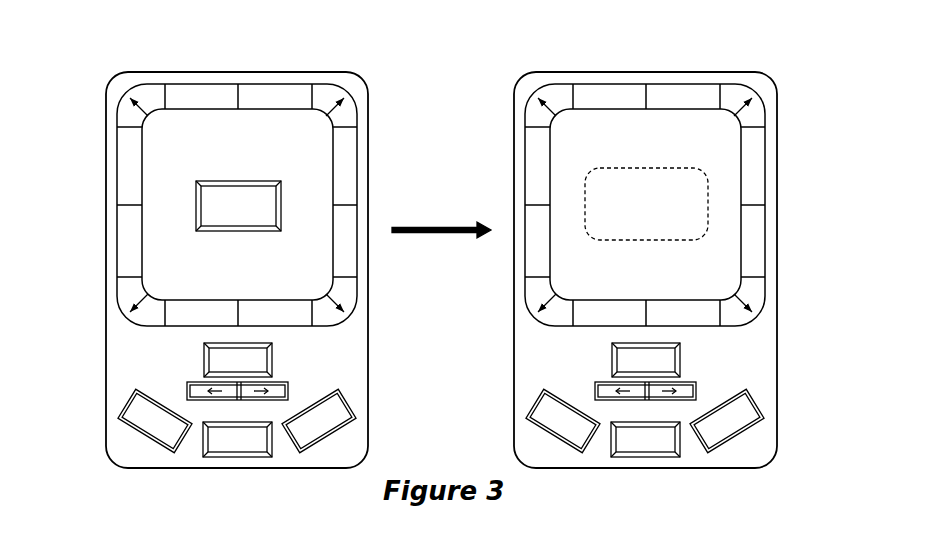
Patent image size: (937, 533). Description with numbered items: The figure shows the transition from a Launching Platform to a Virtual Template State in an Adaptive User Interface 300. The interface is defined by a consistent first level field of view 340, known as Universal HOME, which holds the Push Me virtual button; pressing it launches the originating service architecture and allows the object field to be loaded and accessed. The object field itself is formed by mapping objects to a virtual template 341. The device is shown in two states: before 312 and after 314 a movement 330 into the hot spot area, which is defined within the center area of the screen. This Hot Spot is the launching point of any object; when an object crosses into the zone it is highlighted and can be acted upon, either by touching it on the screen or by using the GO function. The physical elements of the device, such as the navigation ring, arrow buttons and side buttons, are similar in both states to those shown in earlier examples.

The Adaptive User Interface 300 is at (99, 45).
The device before movement 312 is at (106, 133).
The first level field of view 340 is at (318, 128).
The movement 330 is at (432, 228).
The device after movement 314 is at (791, 104).
The virtual template 341 is at (709, 204).